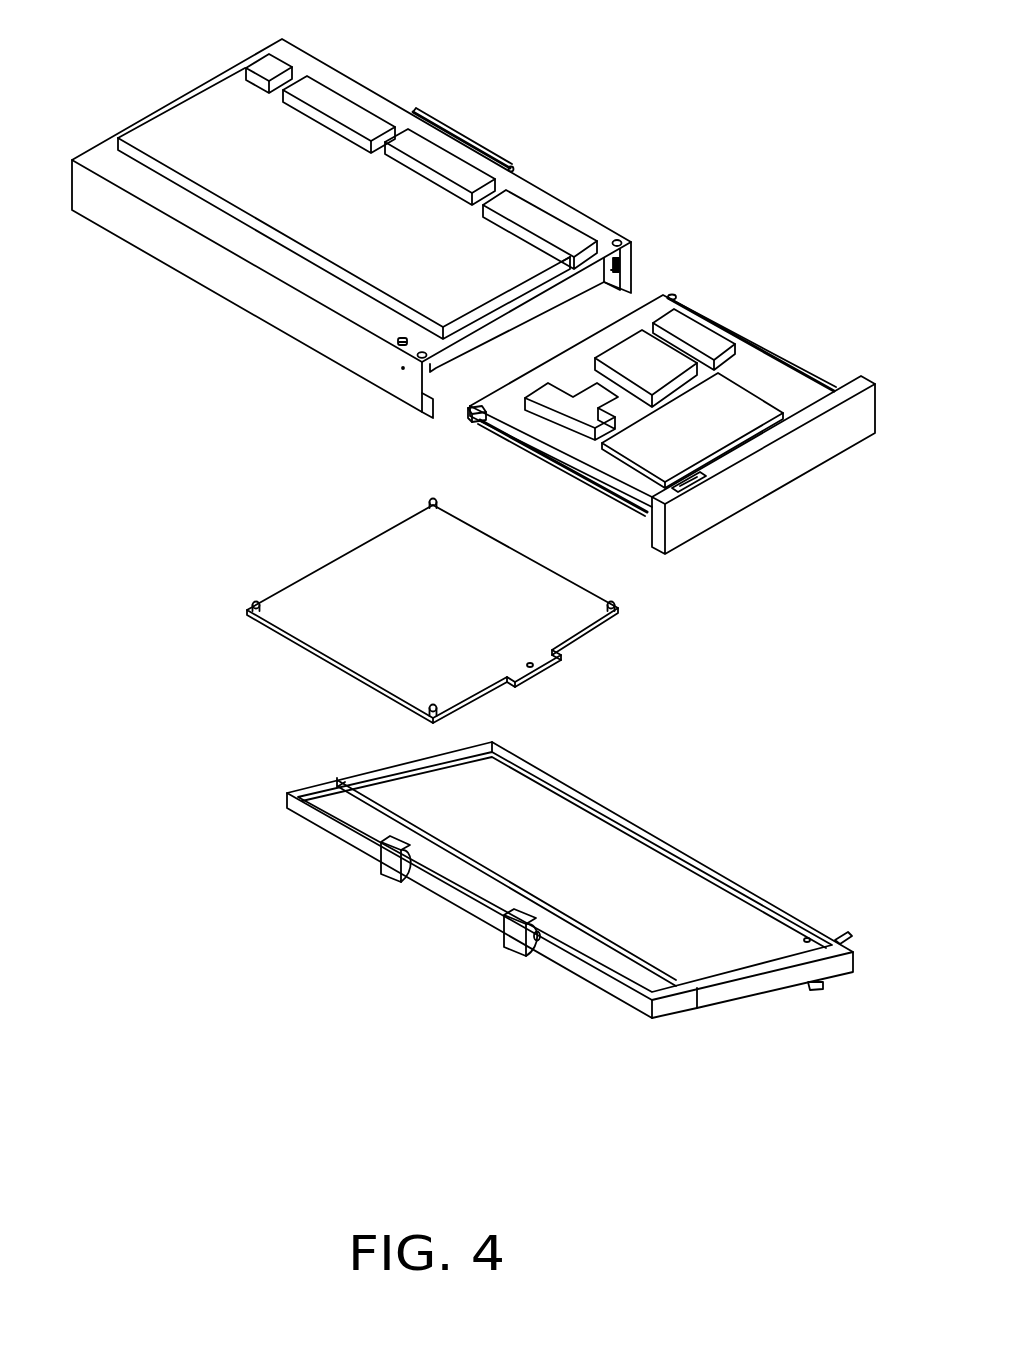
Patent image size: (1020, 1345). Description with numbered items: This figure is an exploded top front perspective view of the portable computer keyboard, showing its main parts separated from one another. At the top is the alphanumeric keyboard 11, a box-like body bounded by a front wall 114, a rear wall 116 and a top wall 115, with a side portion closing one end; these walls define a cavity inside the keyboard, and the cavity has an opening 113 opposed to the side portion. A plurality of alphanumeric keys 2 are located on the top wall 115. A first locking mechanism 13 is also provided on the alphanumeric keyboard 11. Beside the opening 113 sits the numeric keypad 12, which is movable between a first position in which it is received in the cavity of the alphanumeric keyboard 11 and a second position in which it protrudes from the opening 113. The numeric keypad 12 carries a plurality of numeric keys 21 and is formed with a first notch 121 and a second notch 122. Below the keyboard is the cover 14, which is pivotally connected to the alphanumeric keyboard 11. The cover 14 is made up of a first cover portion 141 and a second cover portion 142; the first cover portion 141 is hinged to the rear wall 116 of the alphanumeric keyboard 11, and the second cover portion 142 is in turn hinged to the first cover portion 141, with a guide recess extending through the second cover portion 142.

The alphanumeric keyboard 11 is at (316, 37).
The alphanumeric keys 2 is at (443, 163).
The rear wall 116 is at (624, 271).
The numeric keys 21 is at (695, 330).
The numeric keypad 12 is at (757, 366).
The top wall 115 is at (200, 214).
The front wall 114 is at (300, 316).
The first locking mechanism 13 is at (380, 345).
The opening 113 is at (453, 380).
The first notch 121 is at (470, 423).
The second notch 122 is at (647, 517).
The cover 14 is at (733, 790).
The first cover portion 141 is at (670, 1003).
The second cover portion 142 is at (733, 988).